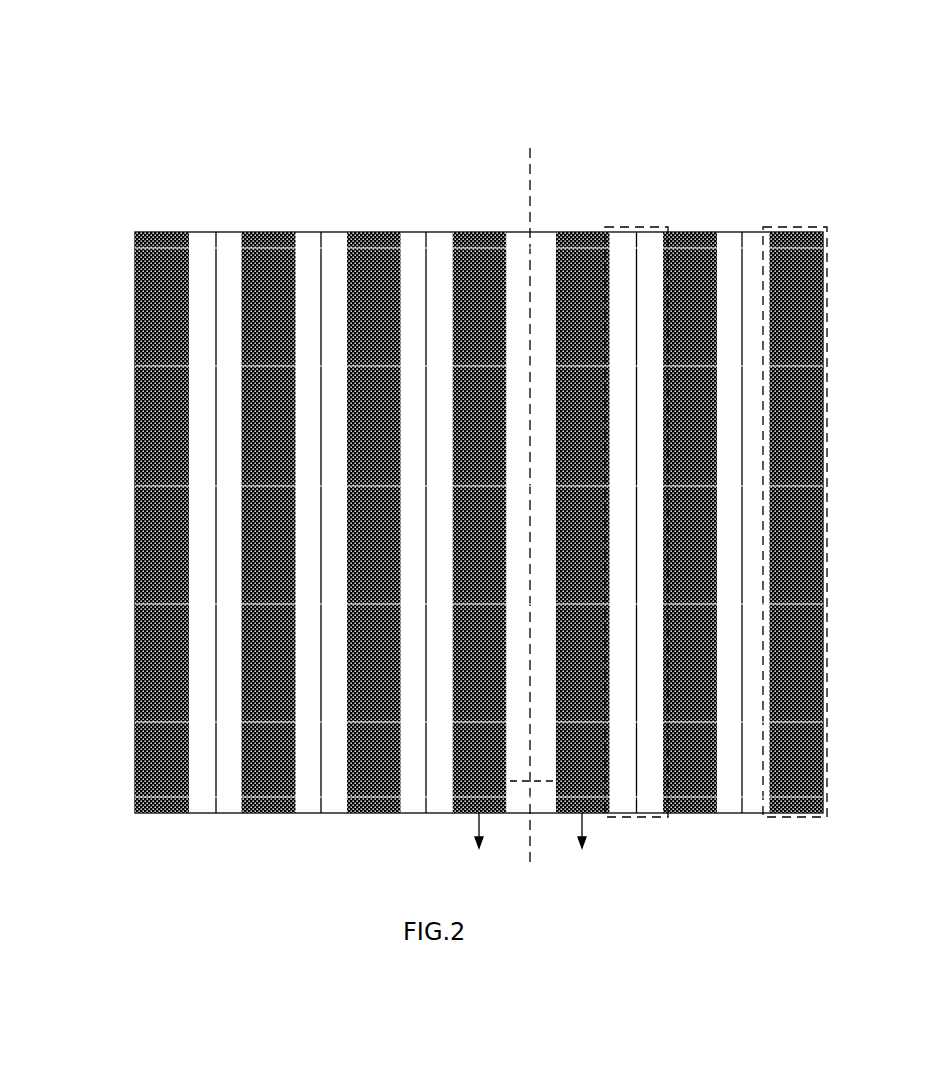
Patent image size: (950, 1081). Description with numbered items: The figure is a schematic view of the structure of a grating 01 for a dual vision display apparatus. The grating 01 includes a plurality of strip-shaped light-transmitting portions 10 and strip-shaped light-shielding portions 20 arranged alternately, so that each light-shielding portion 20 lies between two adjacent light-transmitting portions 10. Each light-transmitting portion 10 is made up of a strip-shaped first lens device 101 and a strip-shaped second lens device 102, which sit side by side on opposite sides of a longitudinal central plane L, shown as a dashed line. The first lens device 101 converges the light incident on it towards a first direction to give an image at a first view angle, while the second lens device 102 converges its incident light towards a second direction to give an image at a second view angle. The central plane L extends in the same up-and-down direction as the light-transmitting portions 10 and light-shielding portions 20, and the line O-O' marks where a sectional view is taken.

The grating 01 is at (443, 444).
The light-transmitting portion 10 is at (627, 228).
The light-shielding portion 20 is at (782, 228).
The first lens device 101 is at (546, 231).
The second lens device 102 is at (512, 231).